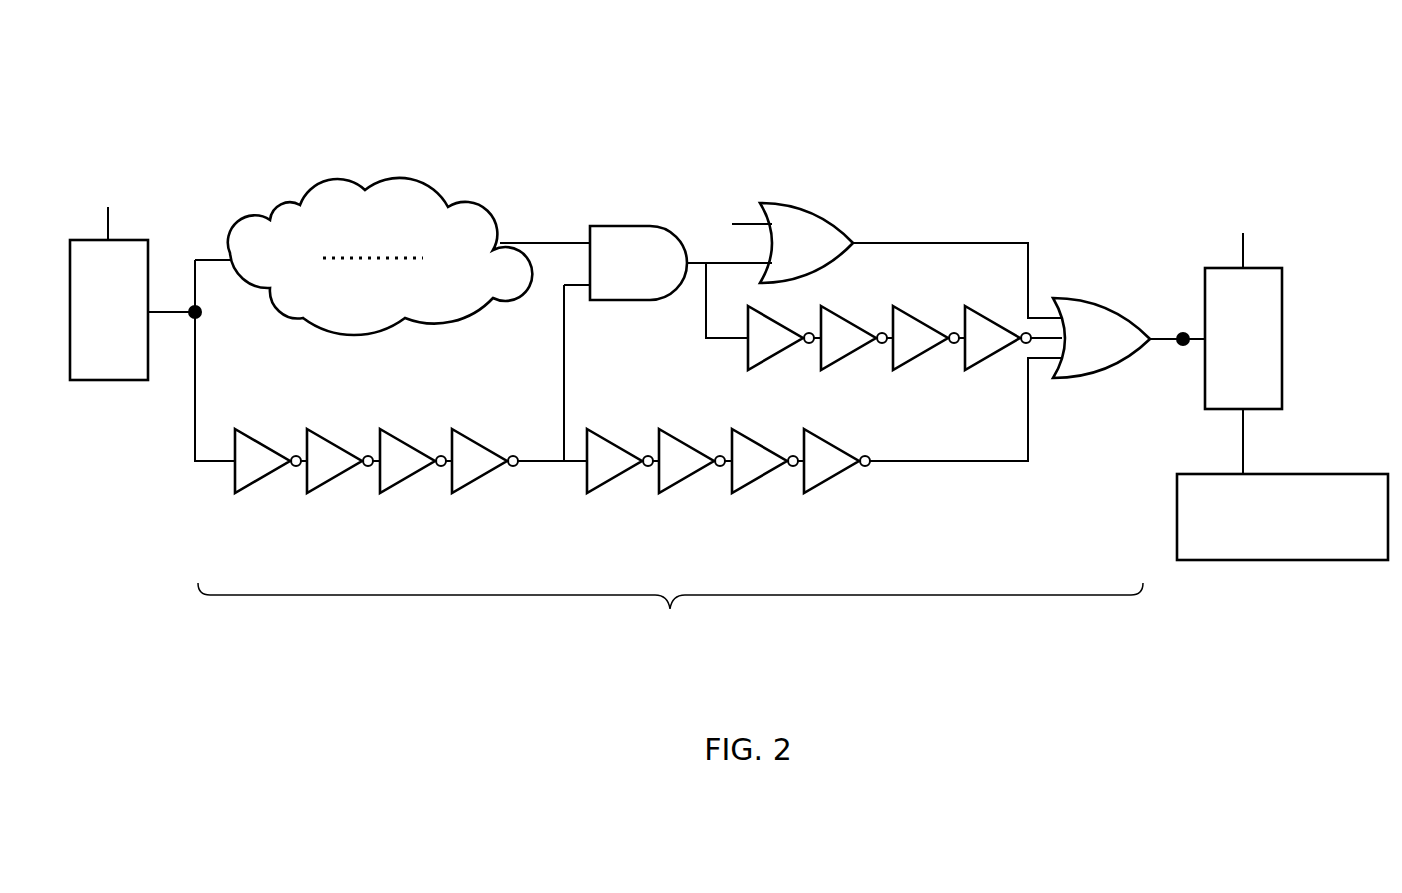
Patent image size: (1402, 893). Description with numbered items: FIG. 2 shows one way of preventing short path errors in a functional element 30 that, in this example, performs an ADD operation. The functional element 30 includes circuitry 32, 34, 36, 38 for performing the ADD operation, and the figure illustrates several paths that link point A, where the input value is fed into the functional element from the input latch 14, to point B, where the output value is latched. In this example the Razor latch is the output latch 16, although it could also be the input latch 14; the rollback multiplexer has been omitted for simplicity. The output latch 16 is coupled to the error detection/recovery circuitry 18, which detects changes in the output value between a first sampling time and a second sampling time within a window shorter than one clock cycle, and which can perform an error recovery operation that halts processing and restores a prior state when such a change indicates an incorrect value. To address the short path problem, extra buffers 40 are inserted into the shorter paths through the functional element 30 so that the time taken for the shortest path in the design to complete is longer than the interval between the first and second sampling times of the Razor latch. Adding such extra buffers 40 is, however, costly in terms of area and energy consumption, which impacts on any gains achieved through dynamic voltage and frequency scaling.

The input latch 14 is at (108, 381).
The output latch 16 is at (1284, 300).
The error detection/recovery circuitry 18 is at (1365, 473).
The functional element 30 is at (368, 120).
The circuitry 32 is at (285, 208).
The circuitry 34 is at (628, 225).
The circuitry 36 is at (816, 208).
The circuitry 38 is at (1108, 303).
The extra buffers 40 is at (235, 493).